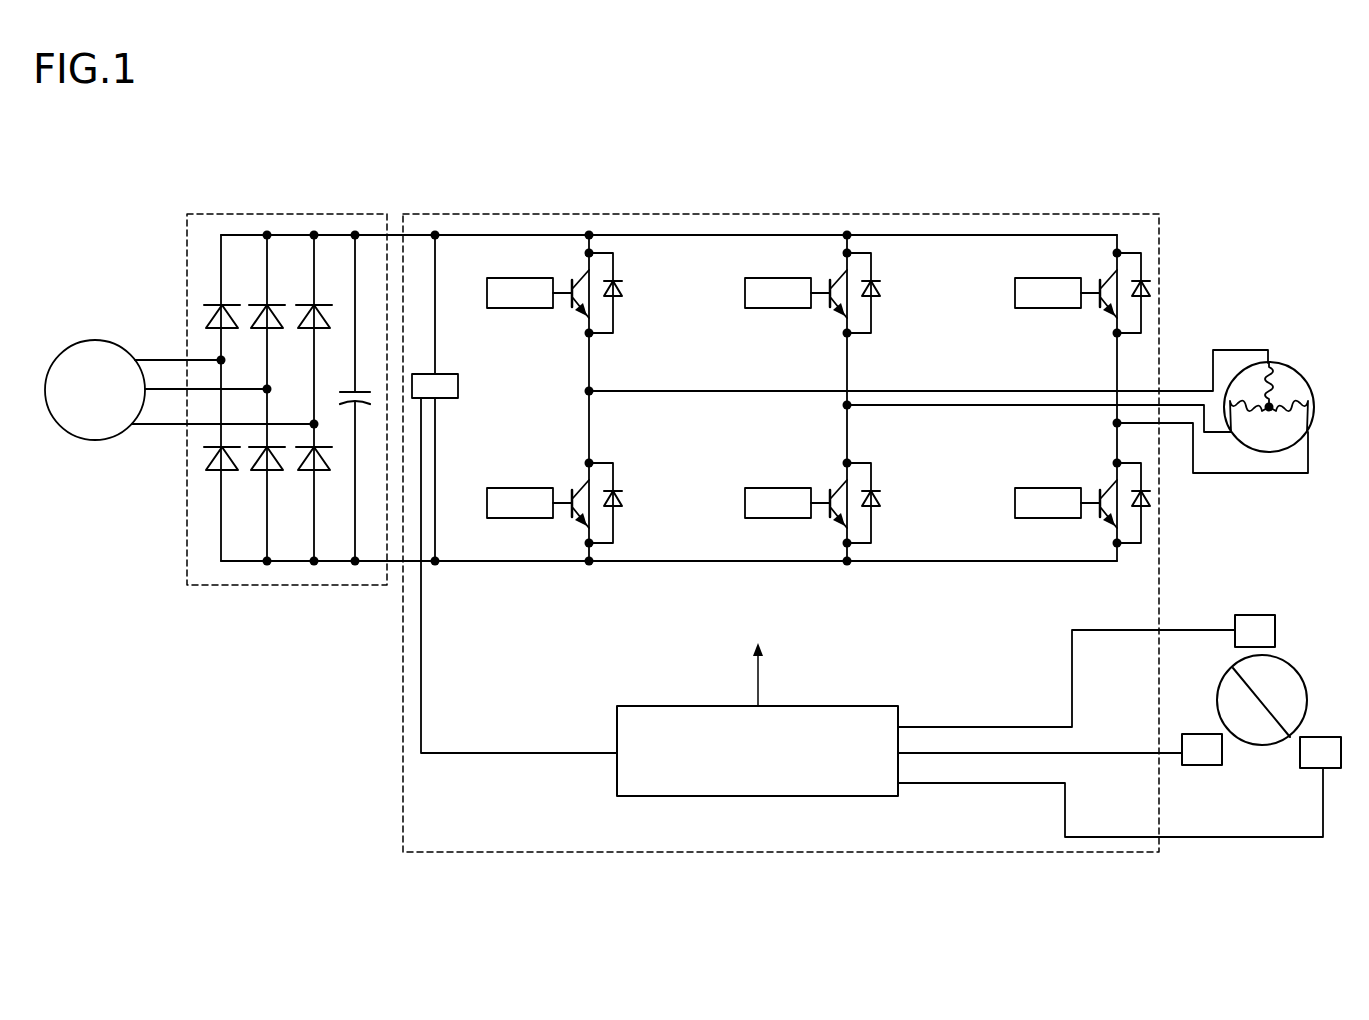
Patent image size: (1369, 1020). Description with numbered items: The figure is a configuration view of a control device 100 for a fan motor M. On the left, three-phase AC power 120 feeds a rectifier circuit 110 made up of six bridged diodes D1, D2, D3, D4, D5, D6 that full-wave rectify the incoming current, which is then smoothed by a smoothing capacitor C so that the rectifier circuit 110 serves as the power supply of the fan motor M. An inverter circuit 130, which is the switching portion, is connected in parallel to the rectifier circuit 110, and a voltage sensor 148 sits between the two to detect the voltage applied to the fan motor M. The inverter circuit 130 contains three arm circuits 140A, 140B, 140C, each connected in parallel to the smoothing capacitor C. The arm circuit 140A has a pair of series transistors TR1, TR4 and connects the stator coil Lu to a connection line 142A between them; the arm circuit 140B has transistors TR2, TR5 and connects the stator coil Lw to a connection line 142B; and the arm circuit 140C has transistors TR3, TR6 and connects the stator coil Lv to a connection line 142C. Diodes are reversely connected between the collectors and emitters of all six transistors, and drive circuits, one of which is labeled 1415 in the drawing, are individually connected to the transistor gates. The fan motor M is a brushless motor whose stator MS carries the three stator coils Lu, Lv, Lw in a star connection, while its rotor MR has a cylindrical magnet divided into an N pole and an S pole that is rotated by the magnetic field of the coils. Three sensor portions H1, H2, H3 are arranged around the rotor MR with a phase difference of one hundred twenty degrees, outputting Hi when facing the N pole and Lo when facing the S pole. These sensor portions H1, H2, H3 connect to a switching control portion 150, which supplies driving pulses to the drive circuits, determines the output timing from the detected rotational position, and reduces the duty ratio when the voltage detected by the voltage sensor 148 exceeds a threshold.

The control device 100 is at (233, 139).
The rectifier circuit 110 is at (330, 213).
The AC power 120 is at (103, 340).
The inverter circuit 130 is at (525, 213).
The arm circuit 140A is at (618, 201).
The arm circuit 140B is at (875, 201).
The arm circuit 140C is at (1142, 201).
The connection line 142A is at (592, 425).
The connection line 142B is at (850, 417).
The connection line 142C is at (1120, 372).
The drive circuit (TR4) 1415 is at (497, 486).
The voltage sensor 148 is at (458, 388).
The switching control portion 150 is at (885, 705).
The diode D1 is at (227, 303).
The diode D2 is at (273, 303).
The diode D3 is at (320, 303).
The diode D4 is at (228, 472).
The diode D5 is at (274, 472).
The diode D6 is at (321, 472).
The smoothing capacitor C is at (351, 385).
The transistor TR1 is at (580, 318).
The transistor TR2 is at (838, 318).
The transistor TR3 is at (1108, 318).
The transistor TR4 is at (580, 527).
The transistor TR5 is at (838, 527).
The transistor TR6 is at (1108, 527).
The fan motor M is at (1280, 287).
The stator MS is at (1282, 365).
The rotor MR is at (1295, 668).
The stator coil Lu is at (1276, 384).
The stator coil Lv is at (1292, 425).
The stator coil Lw is at (1245, 425).
The sensor portion H1 is at (1255, 631).
The sensor portion H2 is at (1202, 749).
The sensor portion H3 is at (1320, 752).